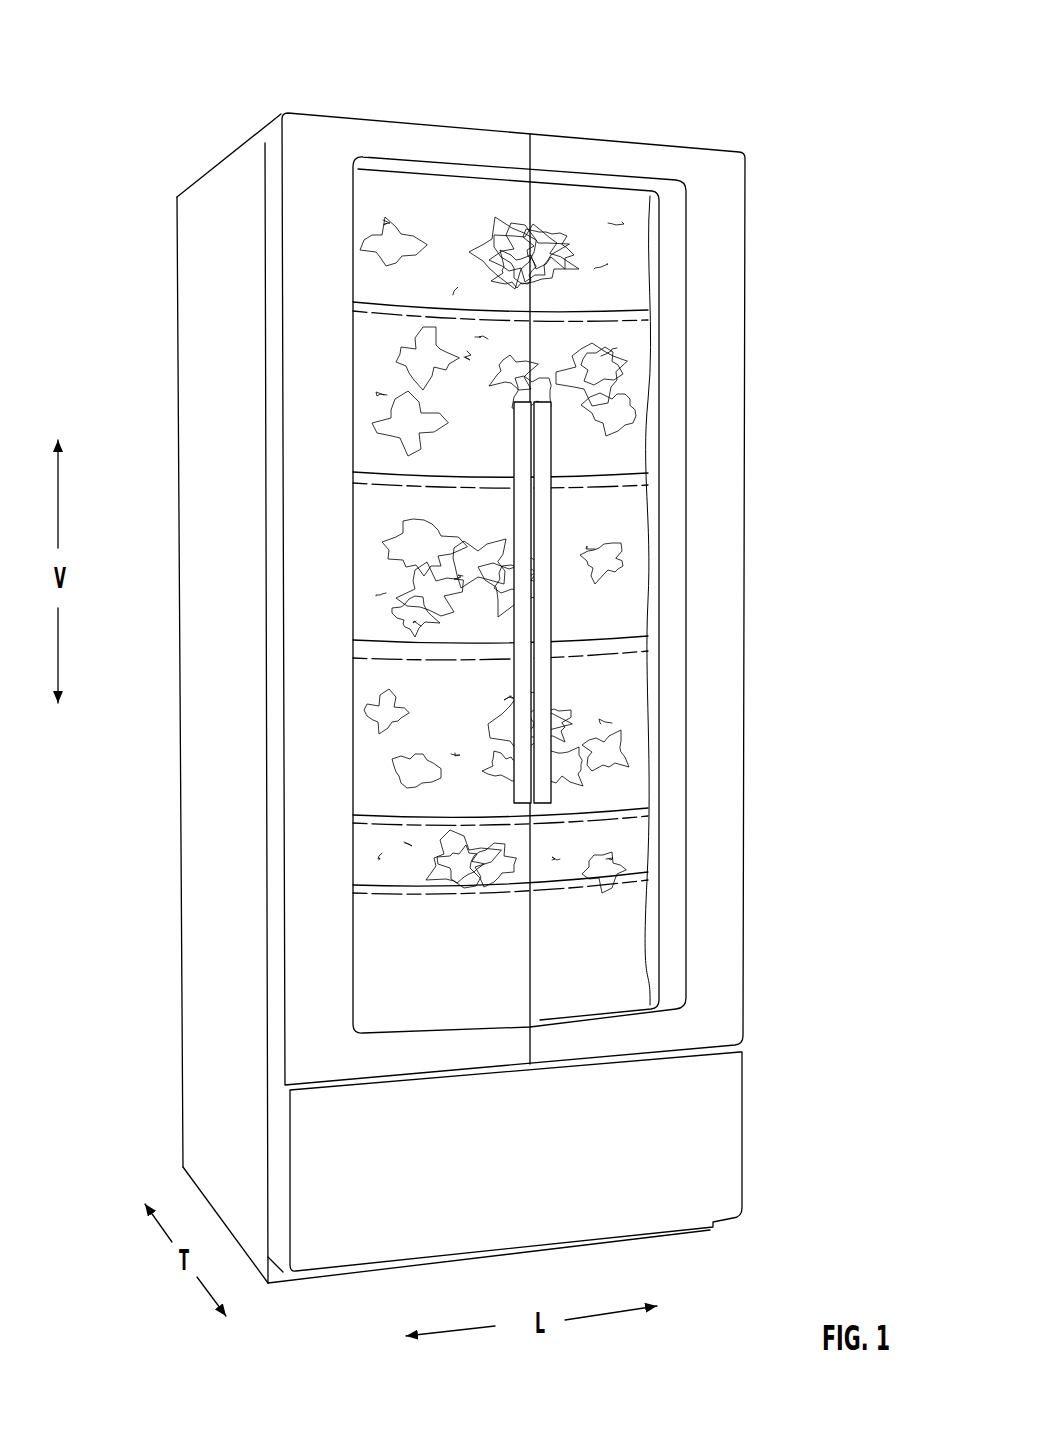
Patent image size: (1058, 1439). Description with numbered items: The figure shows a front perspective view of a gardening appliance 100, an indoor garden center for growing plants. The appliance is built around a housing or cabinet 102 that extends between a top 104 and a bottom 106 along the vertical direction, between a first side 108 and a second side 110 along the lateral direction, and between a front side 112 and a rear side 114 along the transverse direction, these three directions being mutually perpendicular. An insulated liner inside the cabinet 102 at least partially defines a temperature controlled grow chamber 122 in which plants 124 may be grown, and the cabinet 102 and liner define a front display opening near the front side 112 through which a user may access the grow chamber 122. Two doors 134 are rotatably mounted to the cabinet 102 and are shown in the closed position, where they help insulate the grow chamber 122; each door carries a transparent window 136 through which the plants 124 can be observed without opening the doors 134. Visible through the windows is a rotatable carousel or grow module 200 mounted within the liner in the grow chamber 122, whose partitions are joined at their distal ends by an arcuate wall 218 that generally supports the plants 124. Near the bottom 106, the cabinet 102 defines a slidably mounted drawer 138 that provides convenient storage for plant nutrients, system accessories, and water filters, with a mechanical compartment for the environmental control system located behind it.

The gardening appliance 100 is at (848, 84).
The cabinet 102 is at (200, 495).
The top 104 is at (237, 150).
The bottom 106 is at (263, 1289).
The first side 108 is at (203, 1049).
The second side 110 is at (584, 1143).
The front side 112 is at (556, 1207).
The rear side 114 is at (175, 722).
The grow chamber 122 is at (558, 594).
The plants 124 is at (642, 240).
The doors 134 is at (587, 153).
The transparent window 136 is at (393, 227).
The drawer 138 is at (700, 1165).
The grow module 200 is at (556, 580).
The arcuate wall 218 is at (388, 340).